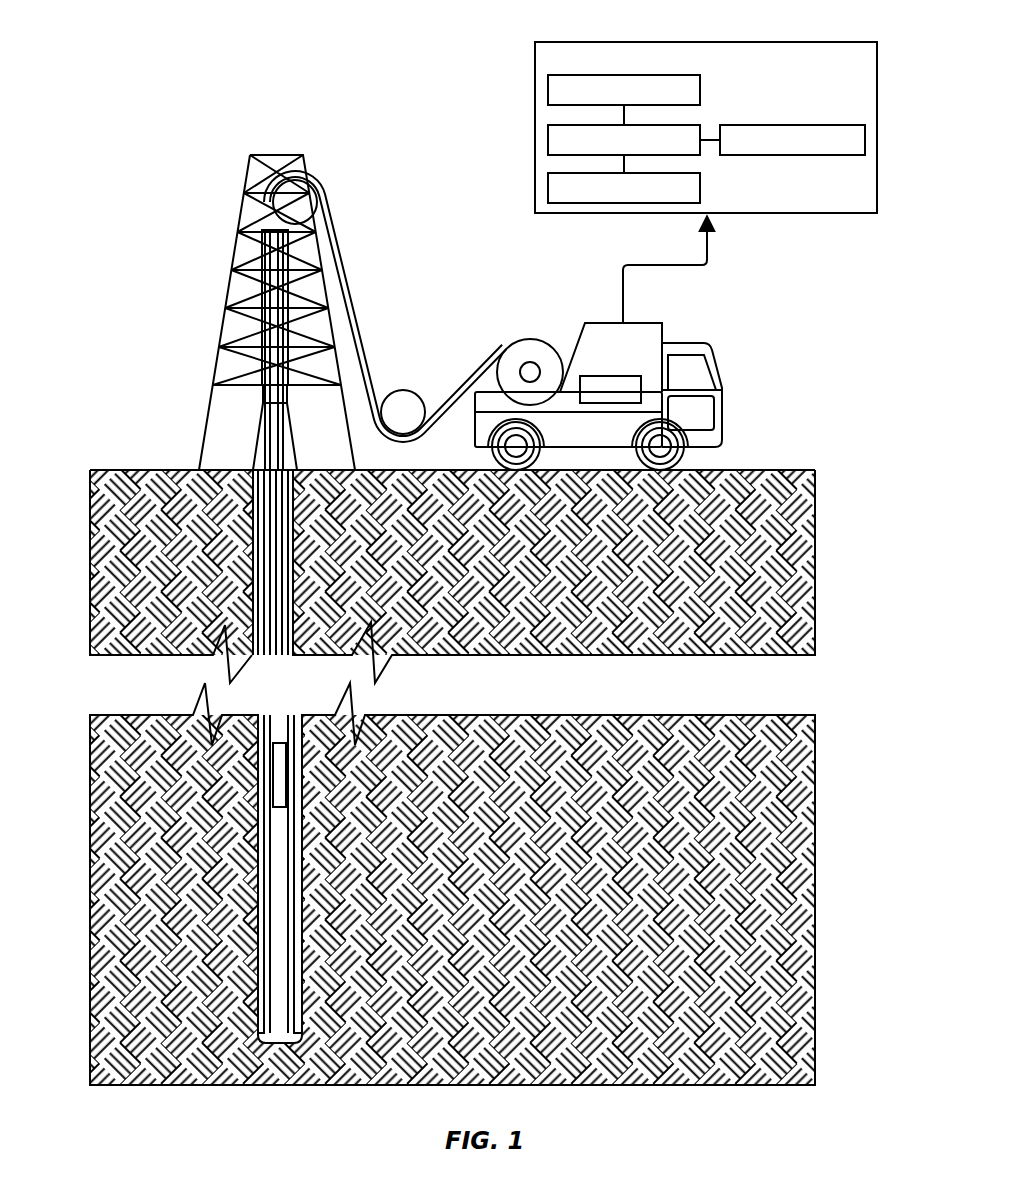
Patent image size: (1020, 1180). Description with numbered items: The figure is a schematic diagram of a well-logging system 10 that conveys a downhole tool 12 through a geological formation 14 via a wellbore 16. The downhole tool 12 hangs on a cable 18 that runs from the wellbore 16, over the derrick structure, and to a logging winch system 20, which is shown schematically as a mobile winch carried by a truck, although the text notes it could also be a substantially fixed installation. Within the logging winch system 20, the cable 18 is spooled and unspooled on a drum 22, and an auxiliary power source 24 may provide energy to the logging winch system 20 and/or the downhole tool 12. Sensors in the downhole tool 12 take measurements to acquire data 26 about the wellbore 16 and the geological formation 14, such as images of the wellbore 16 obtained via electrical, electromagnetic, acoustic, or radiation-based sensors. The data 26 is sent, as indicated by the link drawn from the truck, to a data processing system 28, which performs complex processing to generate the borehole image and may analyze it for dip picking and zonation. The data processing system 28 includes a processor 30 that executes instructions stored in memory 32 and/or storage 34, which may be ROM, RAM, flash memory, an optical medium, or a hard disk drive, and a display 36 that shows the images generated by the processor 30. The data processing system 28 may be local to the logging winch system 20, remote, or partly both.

The well-logging system 10 is at (124, 190).
The downhole tool 12 is at (268, 757).
The geological formation 14 is at (96, 822).
The wellbore 16 is at (240, 518).
The cable 18 is at (366, 301).
The logging winch system 20 is at (598, 359).
The drum 22 is at (530, 338).
The auxiliary power source 24 is at (612, 376).
The data 26 is at (688, 266).
The data processing system 28 is at (683, 117).
The processor 30 is at (680, 125).
The memory 32 is at (548, 88).
The storage 34 is at (700, 183).
The display 36 is at (793, 125).